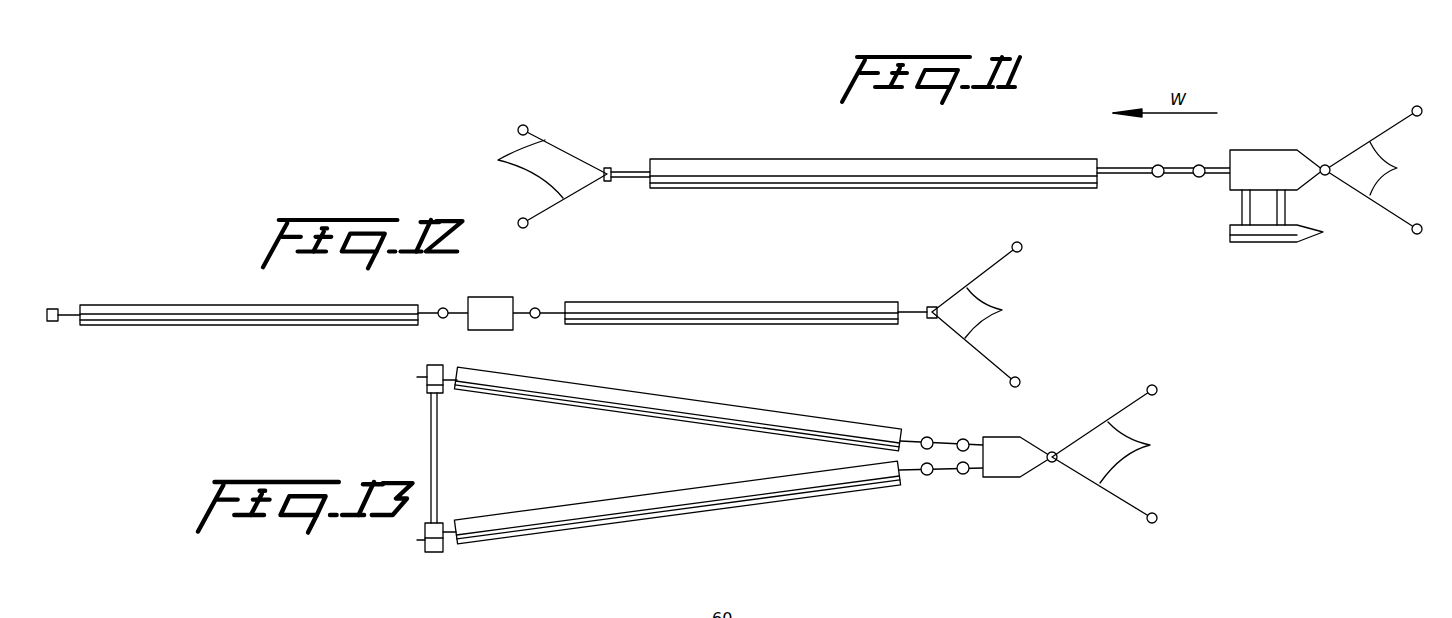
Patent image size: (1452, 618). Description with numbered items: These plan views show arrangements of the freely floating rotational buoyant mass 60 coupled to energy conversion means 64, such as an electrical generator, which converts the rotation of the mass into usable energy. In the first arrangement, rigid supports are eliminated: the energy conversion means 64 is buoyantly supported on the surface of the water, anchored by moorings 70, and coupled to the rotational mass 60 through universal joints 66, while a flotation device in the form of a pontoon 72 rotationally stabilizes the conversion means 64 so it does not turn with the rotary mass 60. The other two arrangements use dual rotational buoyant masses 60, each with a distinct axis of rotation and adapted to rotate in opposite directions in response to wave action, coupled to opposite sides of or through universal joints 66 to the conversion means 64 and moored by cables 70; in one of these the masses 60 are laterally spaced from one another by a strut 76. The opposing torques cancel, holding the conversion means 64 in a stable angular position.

In FIG. 11, the rotational buoyant mass 60 is at (752, 167).
In FIG. 12, the rotational buoyant mass 60 is at (248, 322).
In FIG. 13, the rotational buoyant mass 60 is at (723, 403).
In FIG. 11, the energy conversion means 64 is at (1293, 153).
In FIG. 12, the energy conversion means 64 is at (487, 302).
In FIG. 13, the energy conversion means 64 is at (1020, 447).
In FIG. 11, the universal joints 66 is at (1196, 177).
In FIG. 13, the universal joints 66 is at (965, 439).
In FIG. 11, the moorings 70 is at (950, 170).
In FIG. 12, the moorings 70 is at (977, 314).
In FIG. 13, the moorings 70 is at (1113, 454).
In FIG. 11, the pontoon 72 is at (1288, 242).
In FIG. 13, the strut 76 is at (437, 440).